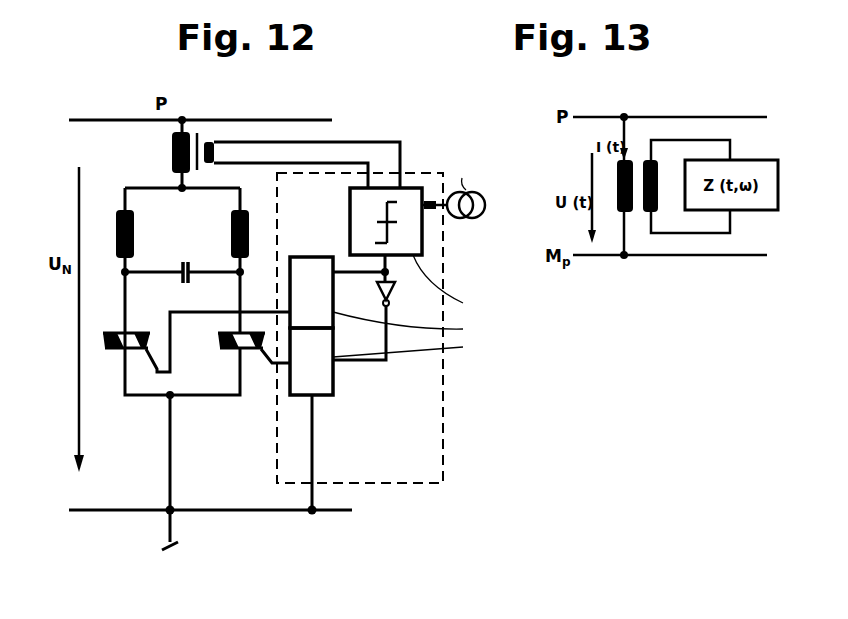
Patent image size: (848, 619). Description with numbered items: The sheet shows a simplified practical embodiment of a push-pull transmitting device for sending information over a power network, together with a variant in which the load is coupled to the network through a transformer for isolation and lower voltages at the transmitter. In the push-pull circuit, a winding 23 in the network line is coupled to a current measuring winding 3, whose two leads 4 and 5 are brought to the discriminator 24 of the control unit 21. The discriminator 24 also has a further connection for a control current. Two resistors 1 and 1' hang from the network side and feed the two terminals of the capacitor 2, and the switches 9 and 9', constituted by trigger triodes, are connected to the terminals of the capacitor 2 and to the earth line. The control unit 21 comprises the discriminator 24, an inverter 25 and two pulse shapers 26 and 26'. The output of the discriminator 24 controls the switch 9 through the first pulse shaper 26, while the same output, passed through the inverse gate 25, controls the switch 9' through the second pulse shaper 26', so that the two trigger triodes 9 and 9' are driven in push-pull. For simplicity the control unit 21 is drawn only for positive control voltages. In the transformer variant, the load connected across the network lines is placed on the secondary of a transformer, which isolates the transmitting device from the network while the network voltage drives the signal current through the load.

The resistor 1 is at (110, 234).
The resistor 1' is at (251, 234).
The capacitor 2 is at (190, 265).
The current measuring winding 3 is at (215, 152).
The lead 4 is at (348, 163).
The lead 5 is at (392, 142).
The switch 9 is at (189, 350).
The switch 9' is at (244, 360).
The control unit 21 is at (387, 483).
The primary winding 23 is at (188, 134).
The discriminator 24 is at (423, 242).
The inverter 25 is at (396, 290).
The first pulse shaper 26 is at (449, 277).
The second pulse shaper 26' is at (449, 381).